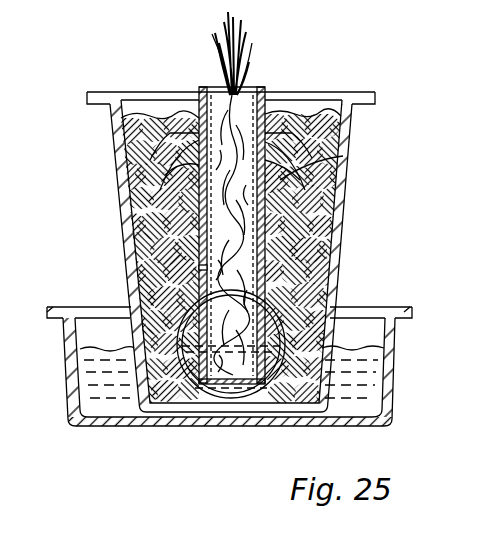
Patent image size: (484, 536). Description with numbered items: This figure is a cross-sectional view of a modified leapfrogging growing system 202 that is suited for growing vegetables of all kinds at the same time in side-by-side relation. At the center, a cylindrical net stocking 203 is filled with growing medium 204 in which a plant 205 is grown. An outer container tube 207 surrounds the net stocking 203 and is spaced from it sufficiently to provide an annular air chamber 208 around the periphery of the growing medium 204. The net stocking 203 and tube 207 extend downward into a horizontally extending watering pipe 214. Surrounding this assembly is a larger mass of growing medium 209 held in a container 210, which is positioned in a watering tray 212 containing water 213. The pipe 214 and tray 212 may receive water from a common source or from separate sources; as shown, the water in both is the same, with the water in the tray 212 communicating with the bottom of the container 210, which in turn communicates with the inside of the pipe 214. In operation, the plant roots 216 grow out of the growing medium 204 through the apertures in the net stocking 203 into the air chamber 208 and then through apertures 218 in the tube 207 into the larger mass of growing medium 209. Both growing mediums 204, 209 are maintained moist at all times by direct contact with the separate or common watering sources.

The leapfrogging growing system 202 is at (327, 41).
The cylindrical net stocking 203 is at (197, 110).
The growing medium 204 is at (245, 80).
The plant 205 is at (240, 38).
The outer container tube 207 is at (268, 88).
The annular air chamber 208 is at (211, 74).
The larger mass of growing medium 209 is at (143, 246).
The container 210 is at (127, 222).
The watering tray 212 is at (84, 320).
The water 213 is at (72, 372).
The watering pipe 214 is at (272, 322).
The plant roots 216 is at (200, 133).
The apertures 218 is at (200, 165).